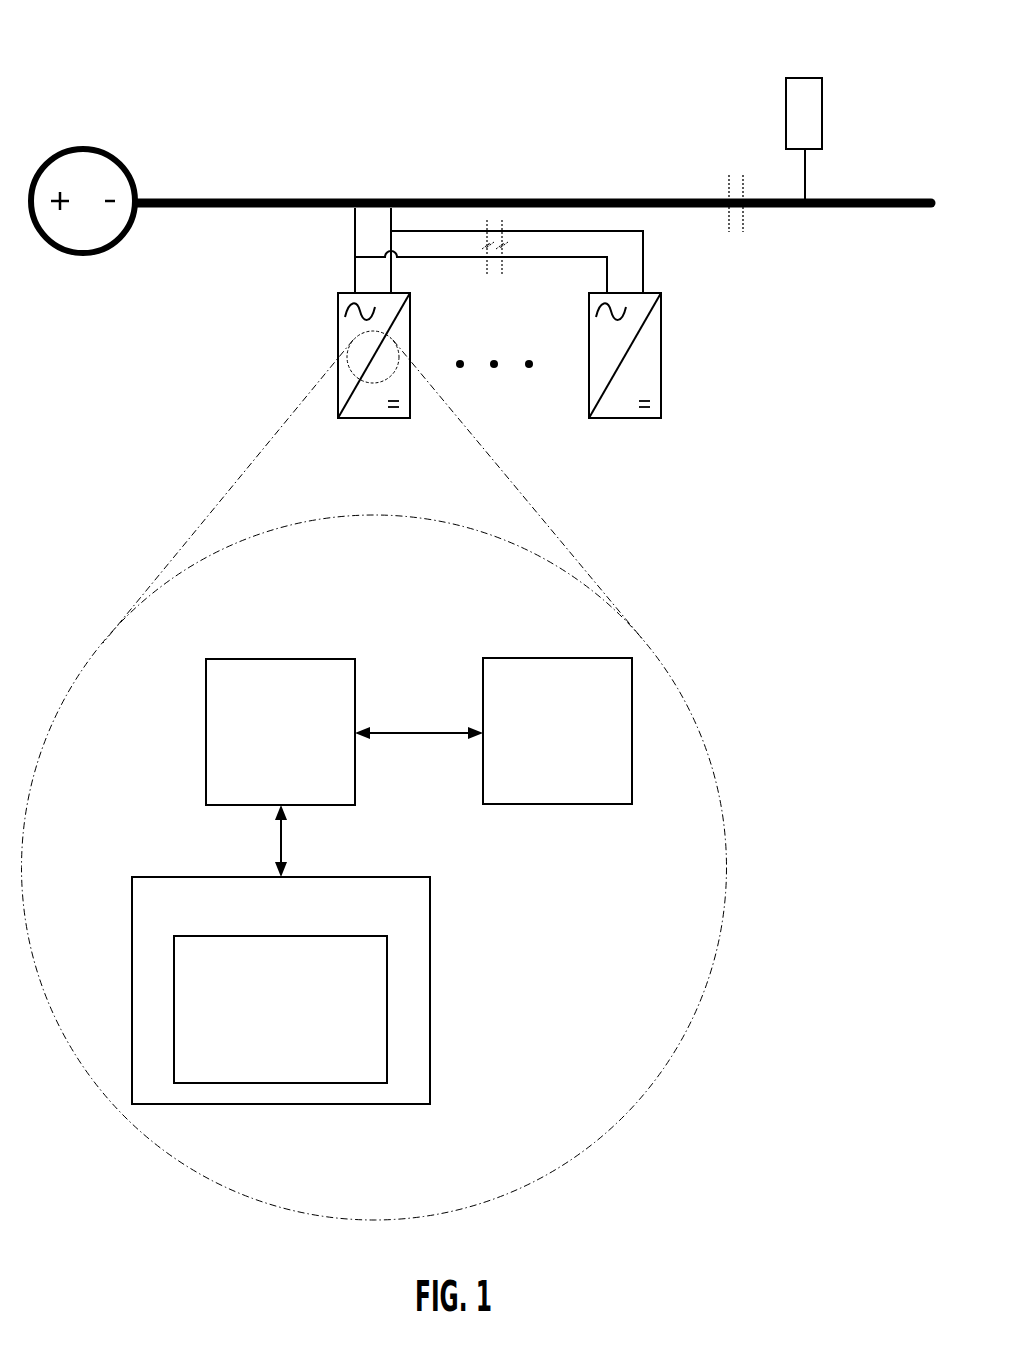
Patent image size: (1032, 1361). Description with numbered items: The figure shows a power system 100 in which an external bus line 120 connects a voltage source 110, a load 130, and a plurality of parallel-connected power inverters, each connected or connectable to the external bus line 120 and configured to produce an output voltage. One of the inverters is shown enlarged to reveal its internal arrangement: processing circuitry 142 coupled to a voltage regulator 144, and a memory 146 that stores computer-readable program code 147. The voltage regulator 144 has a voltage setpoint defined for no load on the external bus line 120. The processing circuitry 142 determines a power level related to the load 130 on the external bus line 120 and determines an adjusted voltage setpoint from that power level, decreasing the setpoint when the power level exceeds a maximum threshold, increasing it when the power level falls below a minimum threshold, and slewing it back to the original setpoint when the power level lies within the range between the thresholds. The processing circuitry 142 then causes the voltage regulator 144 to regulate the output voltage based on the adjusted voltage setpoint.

The power system 100 is at (104, 70).
The voltage source 110 is at (92, 255).
The external bus line 120 is at (297, 198).
The load 130 is at (822, 97).
The processing circuitry 142 is at (264, 772).
The voltage regulator 144 is at (540, 772).
The memory 146 is at (311, 912).
The computer-readable program code 147 is at (263, 1064).